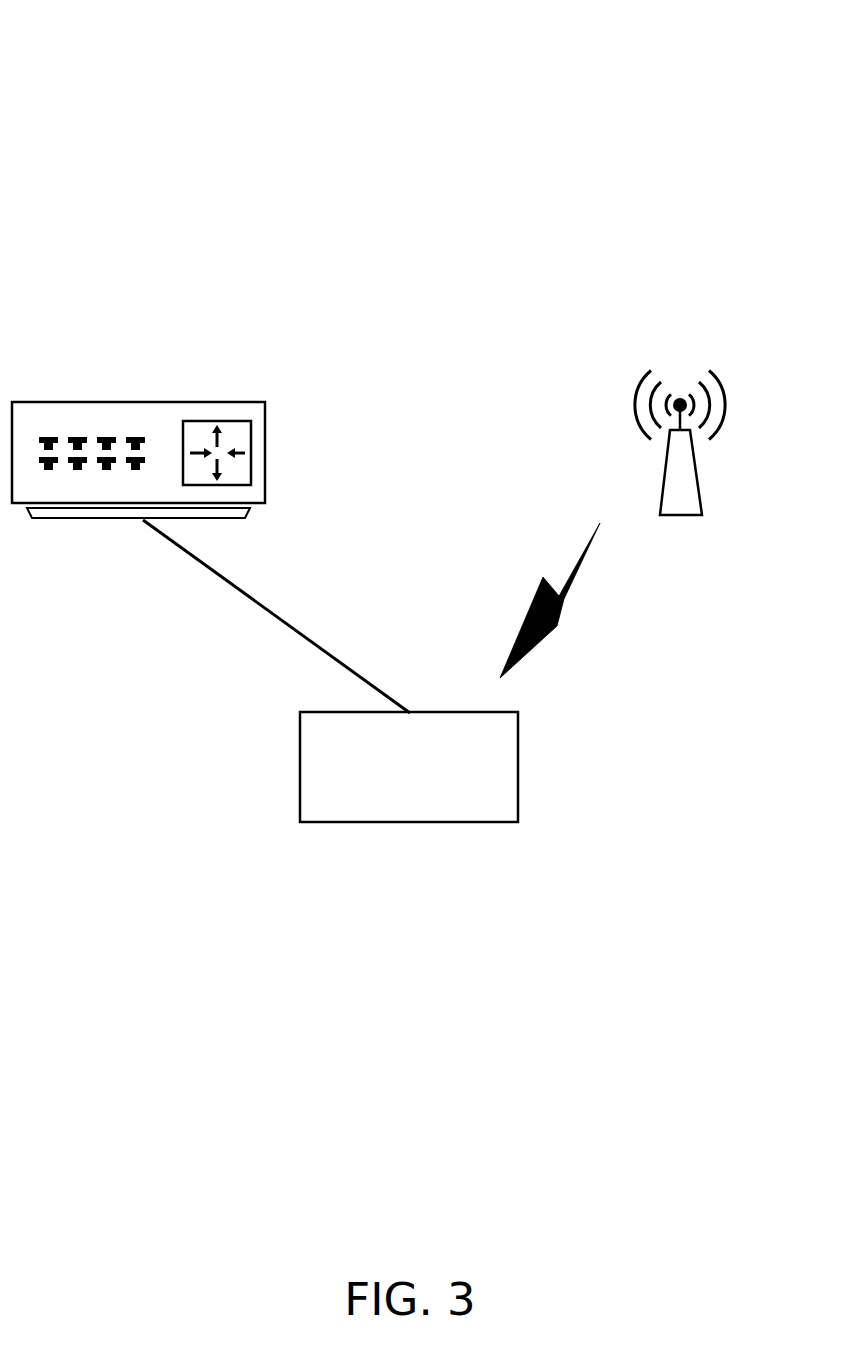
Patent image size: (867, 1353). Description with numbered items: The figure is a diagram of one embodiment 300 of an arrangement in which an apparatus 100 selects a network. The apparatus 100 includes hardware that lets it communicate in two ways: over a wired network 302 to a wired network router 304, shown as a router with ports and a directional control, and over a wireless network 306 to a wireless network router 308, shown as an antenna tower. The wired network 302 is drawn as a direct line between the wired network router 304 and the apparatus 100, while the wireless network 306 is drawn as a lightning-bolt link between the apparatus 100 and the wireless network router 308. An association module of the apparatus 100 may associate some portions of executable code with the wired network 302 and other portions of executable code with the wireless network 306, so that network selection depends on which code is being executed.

The network environment 300 is at (96, 74).
The apparatus 100 is at (430, 793).
The wired network 302 is at (252, 601).
The wired network router 304 is at (138, 402).
The wireless network 306 is at (563, 598).
The wireless network router 308 is at (664, 495).